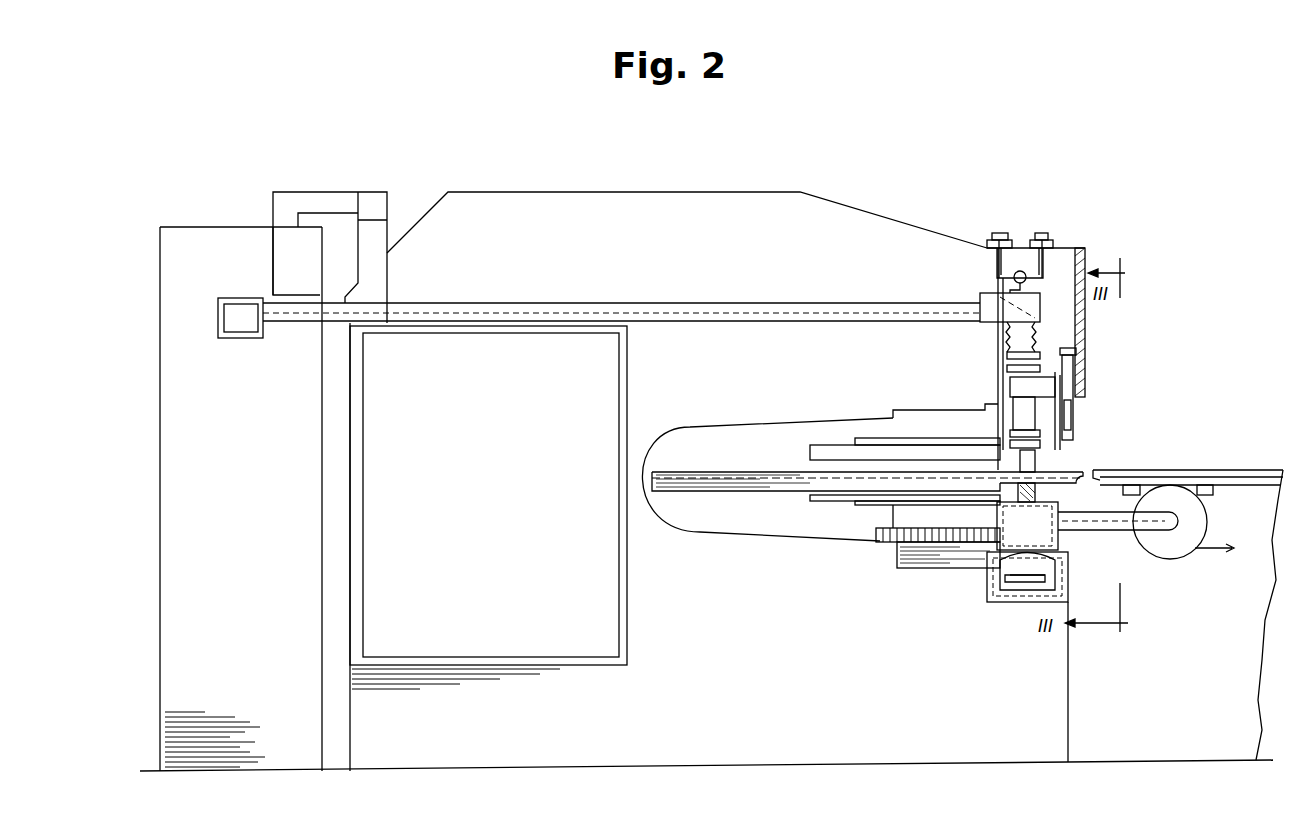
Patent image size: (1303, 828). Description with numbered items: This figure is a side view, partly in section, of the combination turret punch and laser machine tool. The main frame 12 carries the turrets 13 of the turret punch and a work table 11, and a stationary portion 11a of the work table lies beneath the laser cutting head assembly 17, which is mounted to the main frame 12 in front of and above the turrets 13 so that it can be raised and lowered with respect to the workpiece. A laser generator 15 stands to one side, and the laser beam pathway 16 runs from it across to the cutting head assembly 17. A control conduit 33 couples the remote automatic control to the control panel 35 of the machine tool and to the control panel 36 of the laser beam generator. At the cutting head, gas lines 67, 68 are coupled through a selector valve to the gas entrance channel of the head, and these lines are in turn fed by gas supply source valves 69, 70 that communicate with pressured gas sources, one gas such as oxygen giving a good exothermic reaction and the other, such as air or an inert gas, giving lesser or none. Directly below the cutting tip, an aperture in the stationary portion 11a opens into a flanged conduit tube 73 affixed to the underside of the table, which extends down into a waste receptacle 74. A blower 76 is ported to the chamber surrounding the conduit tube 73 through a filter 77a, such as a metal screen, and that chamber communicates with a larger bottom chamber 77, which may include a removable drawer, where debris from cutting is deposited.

The work table 11 is at (1100, 470).
The stationary portion of the work table 11a is at (1076, 467).
The main frame 12 is at (750, 260).
The turrets 13 is at (832, 445).
The laser generator 15 is at (160, 446).
The laser beam pathway 16 is at (582, 302).
The laser cutting head assembly 17 is at (1054, 411).
The control conduit 33 is at (320, 190).
The control panel of the machine tool 35 is at (536, 413).
The control panel of the laser beam generator 36 is at (306, 270).
The gas line 67 is at (1045, 268).
The gas line 68 is at (997, 265).
The gas supply source valve 69 is at (1043, 232).
The gas supply source valve 70 is at (995, 232).
The flanged conduit tube 73 is at (1060, 575).
The waste receptacle 74 is at (1080, 538).
The blower 76 is at (1178, 557).
The bottom chamber 77 is at (1105, 492).
The filter 77a is at (1000, 580).